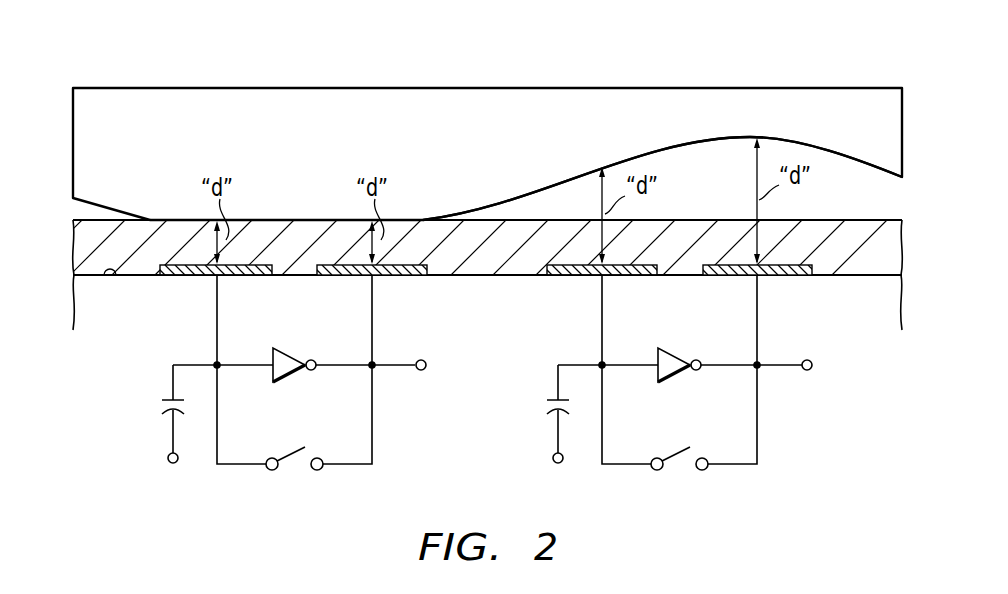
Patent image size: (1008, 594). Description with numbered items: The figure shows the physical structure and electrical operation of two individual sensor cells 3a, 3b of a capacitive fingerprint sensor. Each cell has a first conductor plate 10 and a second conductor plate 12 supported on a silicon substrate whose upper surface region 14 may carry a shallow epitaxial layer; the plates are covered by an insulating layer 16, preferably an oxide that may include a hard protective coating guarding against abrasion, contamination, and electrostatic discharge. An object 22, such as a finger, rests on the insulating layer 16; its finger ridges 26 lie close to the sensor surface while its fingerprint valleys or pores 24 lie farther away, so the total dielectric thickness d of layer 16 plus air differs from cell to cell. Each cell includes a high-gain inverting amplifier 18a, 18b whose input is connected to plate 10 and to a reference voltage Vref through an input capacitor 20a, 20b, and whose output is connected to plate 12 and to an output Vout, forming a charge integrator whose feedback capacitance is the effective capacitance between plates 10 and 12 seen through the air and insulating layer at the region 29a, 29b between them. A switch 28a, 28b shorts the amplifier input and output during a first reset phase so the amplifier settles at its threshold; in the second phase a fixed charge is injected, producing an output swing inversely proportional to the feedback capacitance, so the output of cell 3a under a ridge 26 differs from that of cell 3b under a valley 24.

The object 22 is at (448, 88).
The fingerprint valleys or pores 24 is at (690, 140).
The finger ridges 26 is at (294, 220).
The insulating layer 16 is at (838, 228).
The upper surface region 14 is at (110, 276).
The first conductor plate 10 is at (188, 278).
The second conductor plate 12 is at (404, 278).
The region 29a is at (291, 282).
The region 29b is at (692, 282).
The cell 3a is at (100, 372).
The cell 3b is at (838, 458).
The high-gain inverting amplifier 18a is at (294, 379).
The high-gain inverting amplifier 18b is at (679, 379).
The input capacitor 20a is at (162, 416).
The input capacitor 20b is at (547, 416).
The switch 28a is at (300, 478).
The switch 28b is at (685, 478).